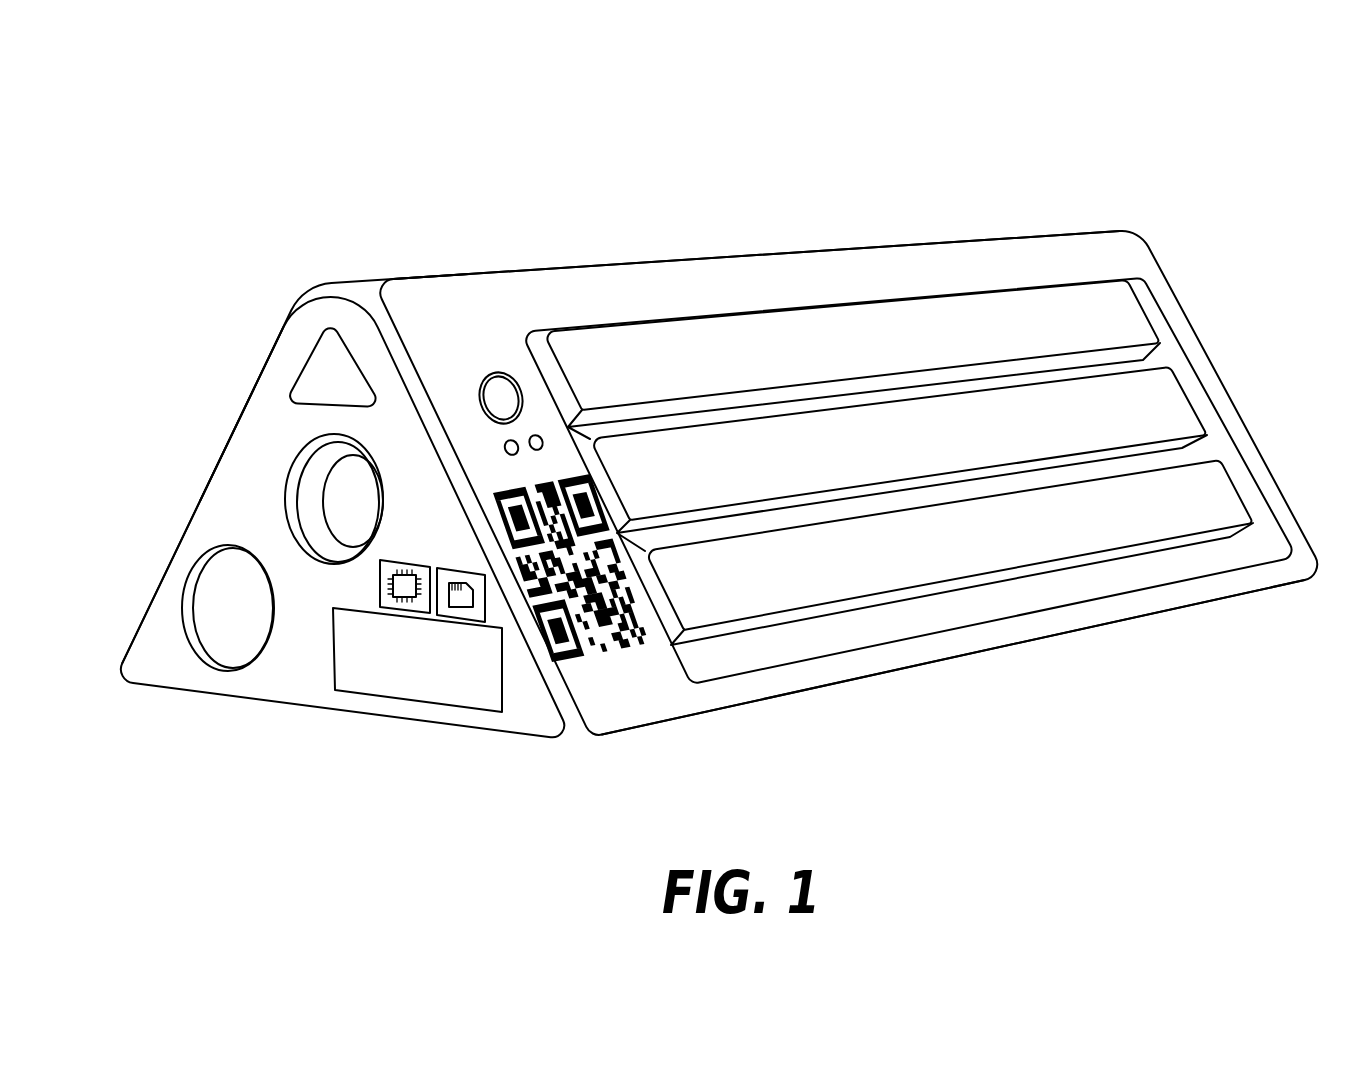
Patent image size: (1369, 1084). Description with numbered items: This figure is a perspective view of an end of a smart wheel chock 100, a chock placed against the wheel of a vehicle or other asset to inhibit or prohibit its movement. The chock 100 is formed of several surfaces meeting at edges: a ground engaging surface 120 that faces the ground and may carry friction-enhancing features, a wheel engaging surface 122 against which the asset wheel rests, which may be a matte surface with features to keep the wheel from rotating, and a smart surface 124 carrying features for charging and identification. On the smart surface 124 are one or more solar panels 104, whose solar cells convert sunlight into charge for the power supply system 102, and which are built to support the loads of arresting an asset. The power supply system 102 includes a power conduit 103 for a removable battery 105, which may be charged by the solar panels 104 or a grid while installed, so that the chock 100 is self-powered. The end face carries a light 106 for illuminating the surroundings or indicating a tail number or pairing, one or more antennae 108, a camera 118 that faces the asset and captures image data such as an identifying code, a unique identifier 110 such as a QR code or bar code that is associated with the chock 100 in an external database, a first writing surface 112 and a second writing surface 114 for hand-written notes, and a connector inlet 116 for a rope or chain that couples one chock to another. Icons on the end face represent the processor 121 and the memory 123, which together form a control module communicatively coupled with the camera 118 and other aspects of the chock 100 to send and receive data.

The smart wheel chock 100 is at (1172, 165).
The power supply system 102 is at (114, 710).
The power conduit 103 is at (120, 577).
The solar panel 104 is at (1127, 312).
The removable battery 105 is at (228, 575).
The light 106 is at (1182, 405).
The antenna 108 is at (507, 441).
The unique identifier 110 is at (618, 647).
The first writing surface 112 is at (332, 357).
The second writing surface 114 is at (354, 684).
The connector inlet 116 is at (343, 514).
The camera 118 is at (498, 387).
The ground engaging surface 120 is at (860, 702).
The processor 121 is at (417, 613).
The wheel engaging surface 122 is at (208, 426).
The memory 123 is at (476, 618).
The smart surface 124 is at (785, 262).